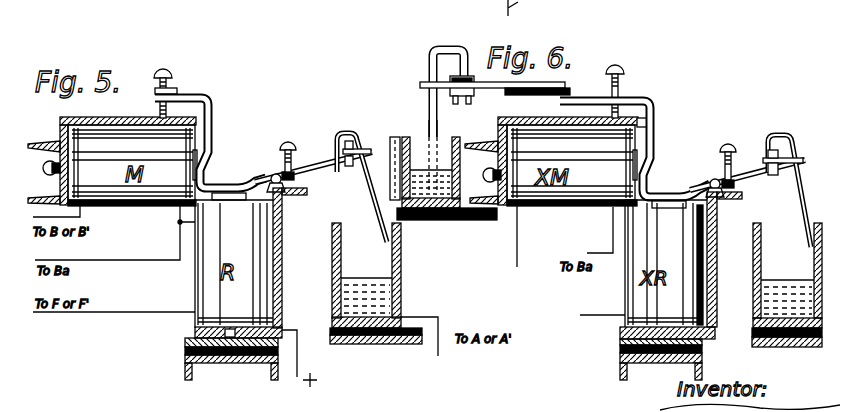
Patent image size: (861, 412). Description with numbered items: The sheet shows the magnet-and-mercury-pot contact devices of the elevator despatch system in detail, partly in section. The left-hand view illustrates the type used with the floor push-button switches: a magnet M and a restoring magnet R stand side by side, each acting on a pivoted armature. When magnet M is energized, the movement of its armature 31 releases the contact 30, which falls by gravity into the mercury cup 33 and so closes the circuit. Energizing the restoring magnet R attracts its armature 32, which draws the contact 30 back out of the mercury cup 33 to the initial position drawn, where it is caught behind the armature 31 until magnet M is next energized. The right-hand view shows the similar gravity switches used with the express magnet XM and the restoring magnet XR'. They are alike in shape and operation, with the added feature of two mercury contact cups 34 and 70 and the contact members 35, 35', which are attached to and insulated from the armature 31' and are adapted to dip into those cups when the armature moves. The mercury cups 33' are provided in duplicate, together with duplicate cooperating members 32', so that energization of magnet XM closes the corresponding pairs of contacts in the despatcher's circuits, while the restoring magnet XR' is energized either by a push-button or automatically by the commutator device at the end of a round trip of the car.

In FIG. 5, the contact 30 is at (353, 135).
In FIG. 5, the armature 31 is at (210, 149).
In FIG. 5, the armature 32 is at (313, 164).
In FIG. 5, the mercury cup 33 is at (391, 283).
In FIG. 6, the mercury contact cup 70 is at (393, 137).
In FIG. 6, the mercury contact cup 34 is at (405, 137).
In FIG. 6, the contact member 35 is at (456, 81).
In FIG. 6, the contact member 35' is at (420, 113).
In FIG. 6, the armature 31' is at (635, 138).
In FIG. 6, the coöperating member 32' is at (747, 179).
In FIG. 6, the mercury cup 33' is at (774, 285).